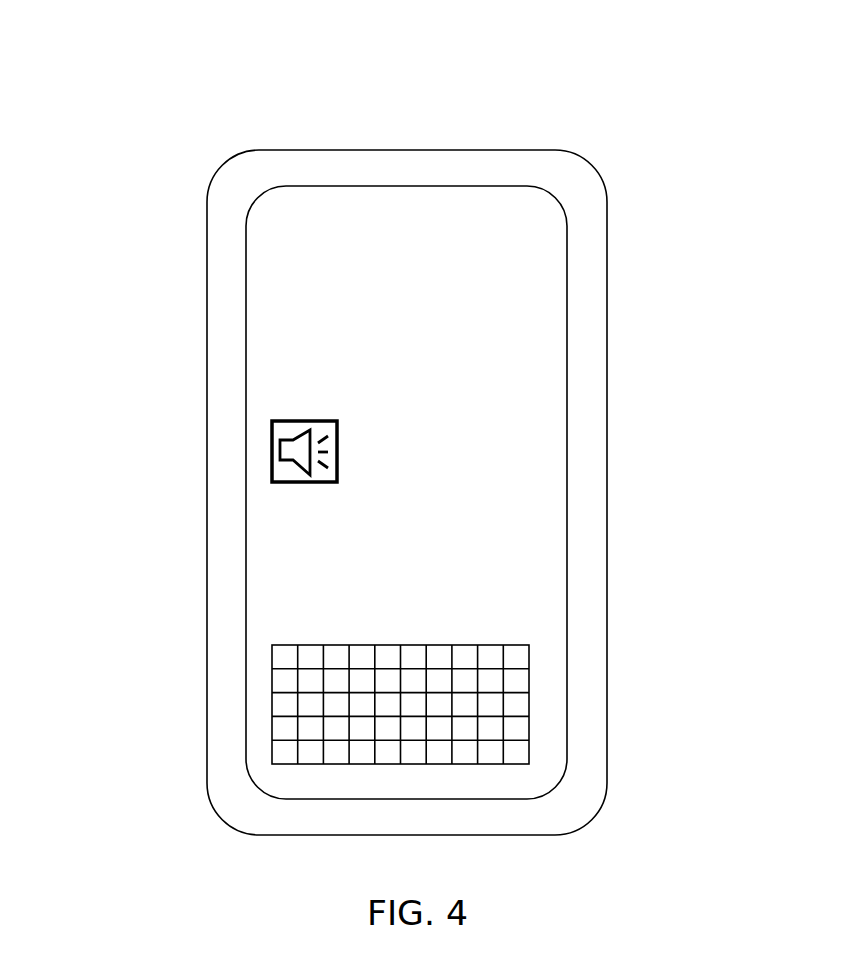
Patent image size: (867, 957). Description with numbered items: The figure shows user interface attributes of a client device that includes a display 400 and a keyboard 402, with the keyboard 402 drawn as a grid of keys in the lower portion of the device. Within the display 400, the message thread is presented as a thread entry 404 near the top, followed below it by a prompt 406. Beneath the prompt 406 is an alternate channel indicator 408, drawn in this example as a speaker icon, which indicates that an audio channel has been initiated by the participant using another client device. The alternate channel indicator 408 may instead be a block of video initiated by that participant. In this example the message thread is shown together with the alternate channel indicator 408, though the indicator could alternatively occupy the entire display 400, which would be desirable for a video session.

The display 400 is at (503, 203).
The keyboard 402 is at (529, 703).
The thread entry 404 is at (285, 233).
The prompt 406 is at (285, 315).
The alternate channel indicator 408 is at (285, 410).